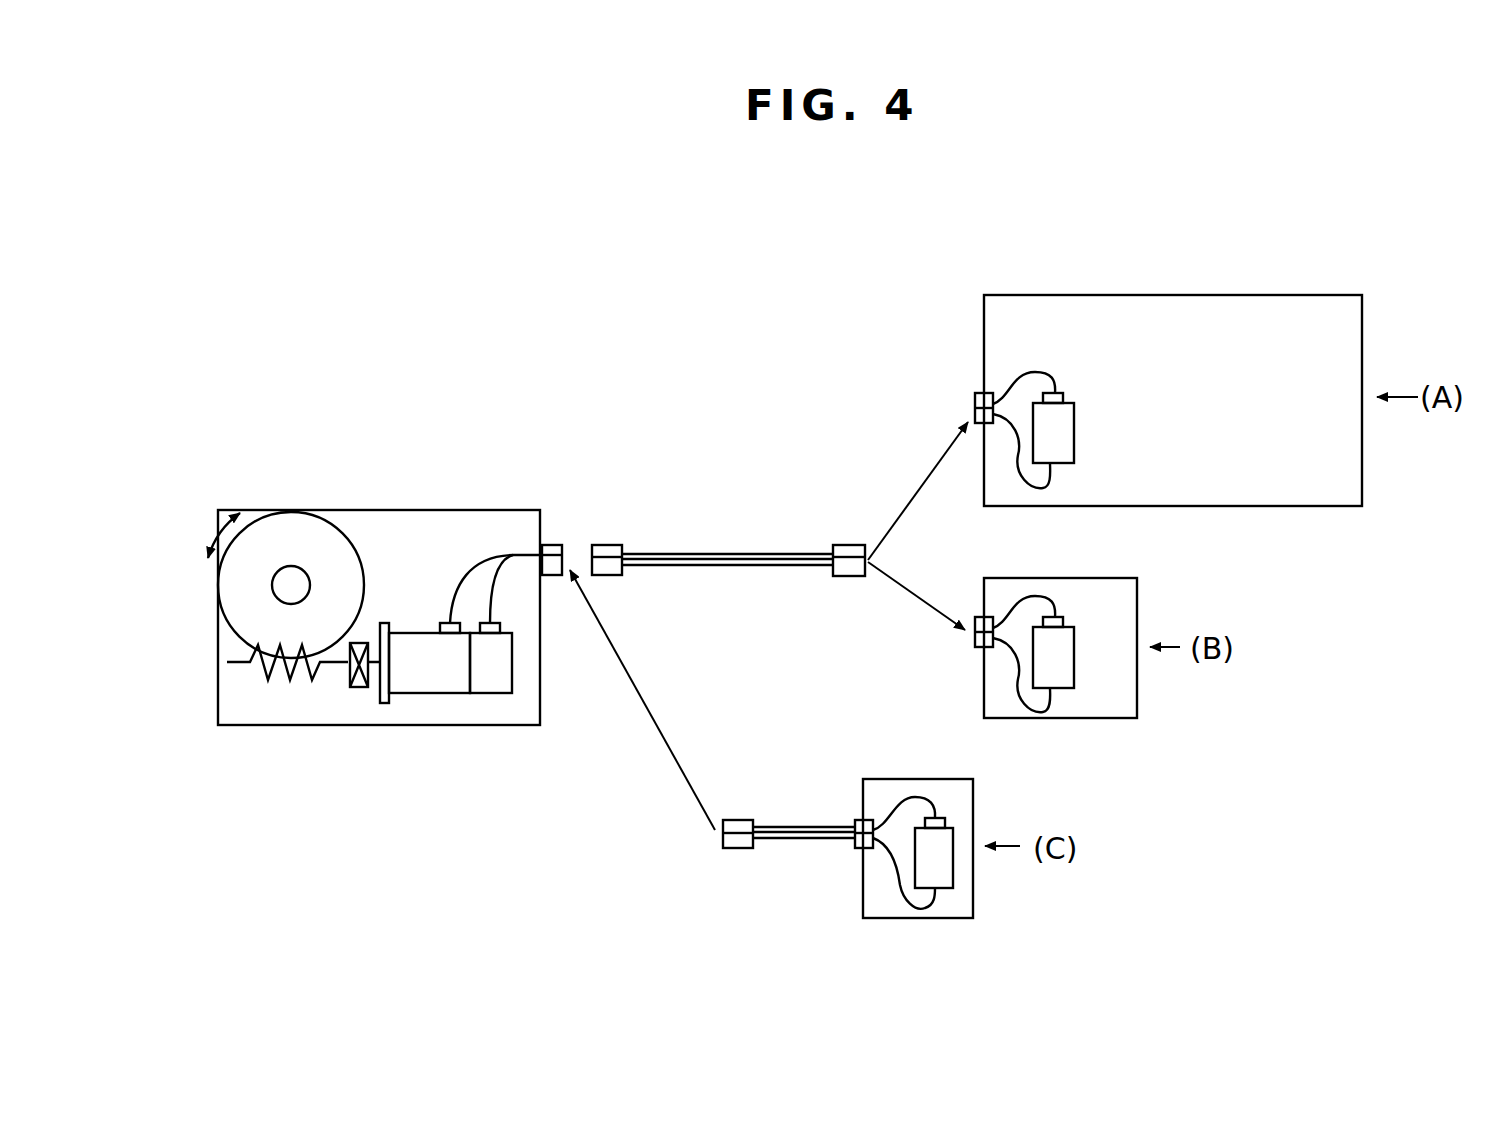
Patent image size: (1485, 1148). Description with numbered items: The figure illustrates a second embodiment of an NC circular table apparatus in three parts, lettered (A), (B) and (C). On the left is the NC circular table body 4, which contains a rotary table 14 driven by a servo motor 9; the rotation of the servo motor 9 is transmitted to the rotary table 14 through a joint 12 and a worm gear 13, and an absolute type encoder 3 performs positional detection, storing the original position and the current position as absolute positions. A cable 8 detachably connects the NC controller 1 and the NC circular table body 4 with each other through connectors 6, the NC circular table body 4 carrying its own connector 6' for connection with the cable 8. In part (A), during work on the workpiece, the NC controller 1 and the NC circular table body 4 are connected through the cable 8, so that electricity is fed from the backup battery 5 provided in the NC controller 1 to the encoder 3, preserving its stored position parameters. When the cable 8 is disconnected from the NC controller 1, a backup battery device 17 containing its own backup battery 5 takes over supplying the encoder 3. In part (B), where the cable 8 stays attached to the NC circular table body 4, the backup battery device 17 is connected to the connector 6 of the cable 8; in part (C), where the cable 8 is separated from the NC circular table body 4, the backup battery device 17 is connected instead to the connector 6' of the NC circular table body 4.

The NC controller 1 is at (1160, 295).
The encoder 3 is at (502, 693).
The NC circular table body 4 is at (362, 503).
The backup battery 5 is at (1075, 432).
The connector 6 is at (792, 595).
The connector 6' is at (565, 523).
The cable 8 is at (743, 565).
The servo motor 9 is at (430, 693).
The joint 12 is at (357, 690).
The worm gear 13 is at (283, 682).
The rotary table 14 is at (218, 585).
The backup battery device 17 is at (975, 681).